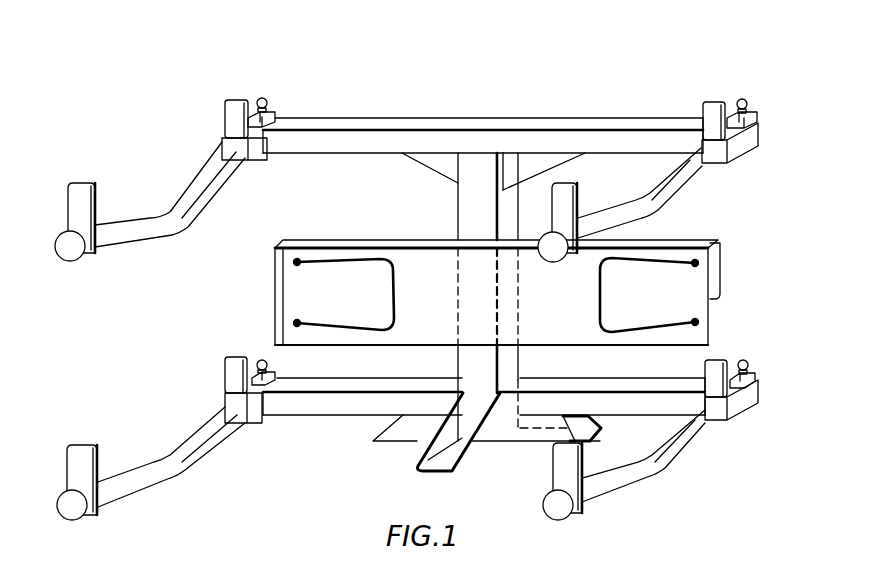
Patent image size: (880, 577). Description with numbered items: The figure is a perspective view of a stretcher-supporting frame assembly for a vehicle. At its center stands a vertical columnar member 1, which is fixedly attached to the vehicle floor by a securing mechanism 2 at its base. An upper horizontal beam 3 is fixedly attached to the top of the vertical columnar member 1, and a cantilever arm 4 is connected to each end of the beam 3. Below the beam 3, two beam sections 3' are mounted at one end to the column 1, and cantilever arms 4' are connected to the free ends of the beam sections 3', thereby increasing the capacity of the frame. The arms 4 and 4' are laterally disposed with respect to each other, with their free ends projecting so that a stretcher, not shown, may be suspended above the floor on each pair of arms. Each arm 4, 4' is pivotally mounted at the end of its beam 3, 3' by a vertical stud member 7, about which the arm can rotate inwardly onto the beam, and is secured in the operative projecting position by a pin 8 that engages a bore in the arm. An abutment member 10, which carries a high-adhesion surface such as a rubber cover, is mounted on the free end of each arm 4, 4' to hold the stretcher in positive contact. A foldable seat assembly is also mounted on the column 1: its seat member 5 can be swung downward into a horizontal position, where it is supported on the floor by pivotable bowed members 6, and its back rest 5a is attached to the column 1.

The vertical columnar member 1 is at (468, 197).
The securing mechanism 2 is at (418, 456).
The upper horizontal beam 3 is at (483, 121).
The beam sections 3' is at (484, 381).
The cantilever arms 4 is at (412, 194).
The cantilever arms 4' is at (408, 459).
The seat member 5 is at (326, 252).
The back rest 5a is at (716, 248).
The pivotable bowed members 6 is at (398, 300).
The vertical stud member 7 is at (273, 117).
The pin 8 is at (262, 98).
The abutment member 10 is at (231, 118).